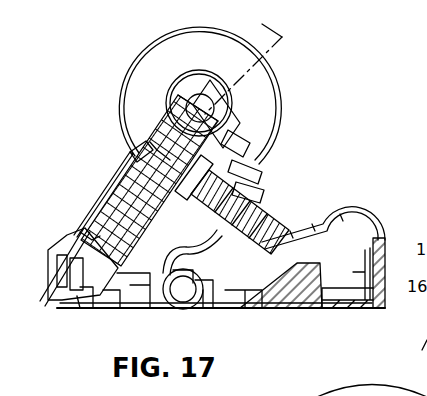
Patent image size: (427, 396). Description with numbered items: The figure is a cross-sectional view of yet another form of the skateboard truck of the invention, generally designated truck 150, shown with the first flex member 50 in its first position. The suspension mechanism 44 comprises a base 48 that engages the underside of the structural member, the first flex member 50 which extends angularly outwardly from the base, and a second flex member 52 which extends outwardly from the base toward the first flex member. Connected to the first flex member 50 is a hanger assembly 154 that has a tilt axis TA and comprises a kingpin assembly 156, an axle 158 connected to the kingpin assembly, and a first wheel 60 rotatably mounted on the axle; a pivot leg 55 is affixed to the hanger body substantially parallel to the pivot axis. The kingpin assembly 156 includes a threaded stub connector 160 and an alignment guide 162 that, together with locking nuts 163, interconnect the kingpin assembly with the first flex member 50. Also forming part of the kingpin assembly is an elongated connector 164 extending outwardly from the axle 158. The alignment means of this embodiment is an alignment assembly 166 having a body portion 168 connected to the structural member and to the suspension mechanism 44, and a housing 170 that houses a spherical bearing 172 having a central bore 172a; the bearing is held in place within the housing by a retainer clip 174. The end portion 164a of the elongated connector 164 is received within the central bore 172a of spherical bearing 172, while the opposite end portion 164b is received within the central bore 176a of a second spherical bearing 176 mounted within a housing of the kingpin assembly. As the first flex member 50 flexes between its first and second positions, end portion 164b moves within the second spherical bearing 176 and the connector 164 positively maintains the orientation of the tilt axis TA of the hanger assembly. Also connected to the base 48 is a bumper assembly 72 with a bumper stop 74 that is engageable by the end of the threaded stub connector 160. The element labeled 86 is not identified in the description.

The first wheel 60 is at (178, 58).
The axle 158 is at (176, 92).
The tilt axis TA is at (275, 45).
The elongated connector 164 is at (137, 195).
The end portion 164b is at (173, 153).
The central bore 176a is at (157, 150).
The pivot leg 55 is at (120, 185).
The second spherical bearing 176 is at (134, 157).
The hanger assembly 154 is at (250, 117).
The kingpin assembly 156 is at (224, 172).
The truck 150 is at (284, 155).
The first flex member 50 is at (262, 173).
The locking nuts 163 is at (260, 194).
The threaded stub connector 160 is at (258, 225).
The alignment guide 162 is at (257, 255).
The base 48 is at (213, 312).
The bumper stop 74 is at (265, 300).
The bumper assembly 72 is at (346, 320).
The suspension mechanism 44 is at (364, 206).
The second flex member 52 is at (325, 223).
The band segment 86 is at (283, 223).
The spherical bearing 172 is at (60, 238).
The housing 170 is at (50, 246).
The body portion 168 is at (48, 271).
The retainer clip 174 is at (76, 234).
The end portion 164a is at (58, 290).
The alignment assembly 166 is at (56, 327).
The central bore 172a is at (77, 296).